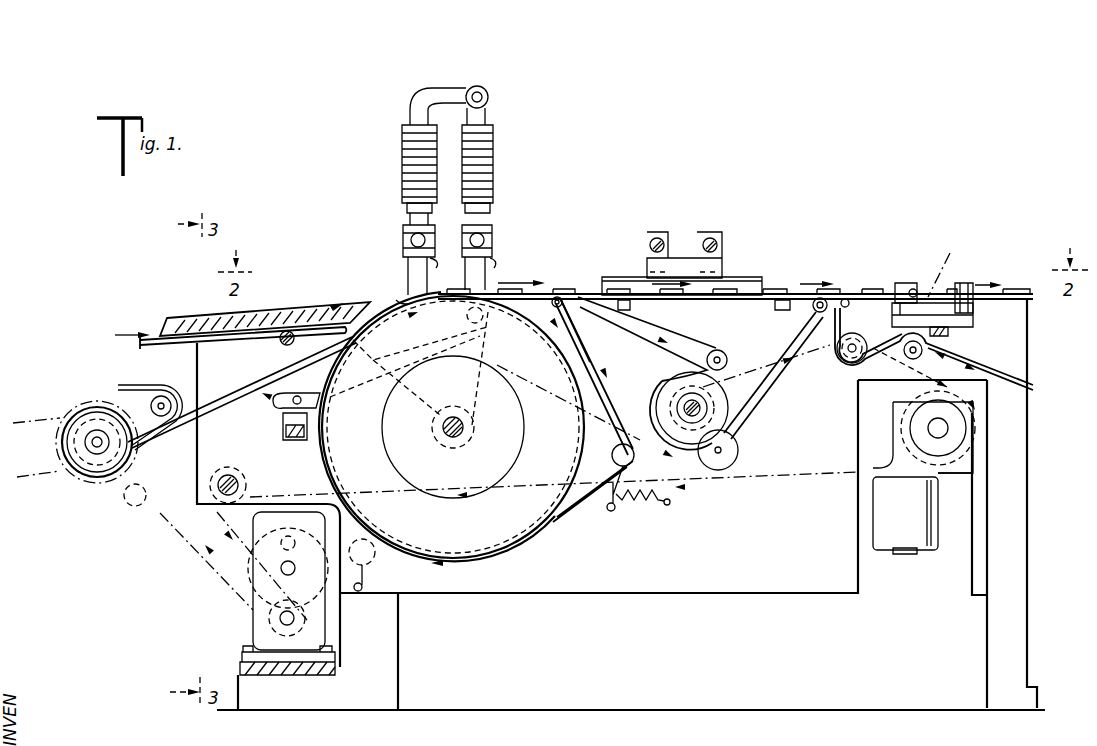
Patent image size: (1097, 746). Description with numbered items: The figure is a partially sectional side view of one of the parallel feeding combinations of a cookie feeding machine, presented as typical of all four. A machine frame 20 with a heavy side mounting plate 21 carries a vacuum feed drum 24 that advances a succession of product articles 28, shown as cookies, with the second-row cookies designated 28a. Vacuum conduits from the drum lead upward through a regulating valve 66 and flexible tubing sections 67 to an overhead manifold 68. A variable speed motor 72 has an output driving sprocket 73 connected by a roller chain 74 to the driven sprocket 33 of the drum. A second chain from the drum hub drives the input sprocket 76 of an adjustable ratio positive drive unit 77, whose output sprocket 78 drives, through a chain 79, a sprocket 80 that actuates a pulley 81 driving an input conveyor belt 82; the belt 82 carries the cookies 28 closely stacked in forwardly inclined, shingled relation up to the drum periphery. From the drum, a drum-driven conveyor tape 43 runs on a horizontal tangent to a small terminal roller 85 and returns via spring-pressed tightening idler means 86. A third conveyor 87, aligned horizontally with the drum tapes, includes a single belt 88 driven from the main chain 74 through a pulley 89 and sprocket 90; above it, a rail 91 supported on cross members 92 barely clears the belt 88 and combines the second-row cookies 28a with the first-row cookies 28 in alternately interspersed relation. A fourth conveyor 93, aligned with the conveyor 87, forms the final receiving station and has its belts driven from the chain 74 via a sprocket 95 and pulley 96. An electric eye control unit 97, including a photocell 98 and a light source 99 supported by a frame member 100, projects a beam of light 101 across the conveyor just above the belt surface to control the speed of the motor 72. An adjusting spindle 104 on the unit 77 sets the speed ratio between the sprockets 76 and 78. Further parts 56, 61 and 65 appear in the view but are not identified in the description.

The machine frame 20 is at (1030, 441).
The side mounting plate 21 is at (686, 592).
The drum 24 is at (417, 545).
The product articles 28 is at (190, 318).
The second row cookies 28a is at (396, 300).
The driven sprocket 33 is at (522, 456).
The conveyor tape 43 is at (608, 405).
The block 56 is at (283, 432).
The hook 61 is at (484, 276).
The guide plate 65 is at (409, 366).
The regulating valve 66 is at (401, 228).
The flexible tubing section 67 is at (403, 165).
The overhead manifold 68 is at (490, 96).
The variable speed motor 72 is at (905, 520).
The output driving sprocket 73 is at (900, 420).
The roller chain 74 is at (776, 371).
The input sprocket 76 is at (300, 525).
The adjustable ratio positive drive unit 77 is at (250, 631).
The output sprocket 78 is at (268, 608).
The chain 79 is at (170, 515).
The sprocket 80 is at (125, 474).
The pulley 81 is at (168, 420).
The input conveyor belt 82 is at (226, 415).
The terminal roller 85 is at (555, 306).
The tightening idler means 86 is at (612, 455).
The third conveyor 87 is at (586, 292).
The belt 88 is at (668, 338).
The pulley 89 is at (680, 378).
The sprocket 90 is at (668, 404).
The rail 91 is at (742, 275).
The cross member 92 is at (673, 238).
The fourth conveyor 93 is at (888, 280).
The sprocket 95 is at (845, 363).
The pulley 96 is at (871, 336).
The electric eye control unit 97 is at (950, 320).
The photocell 98 is at (905, 282).
The light source 99 is at (966, 282).
The frame member 100 is at (945, 336).
The beam of light 101 is at (949, 264).
The adjusting spindle 104 is at (300, 566).